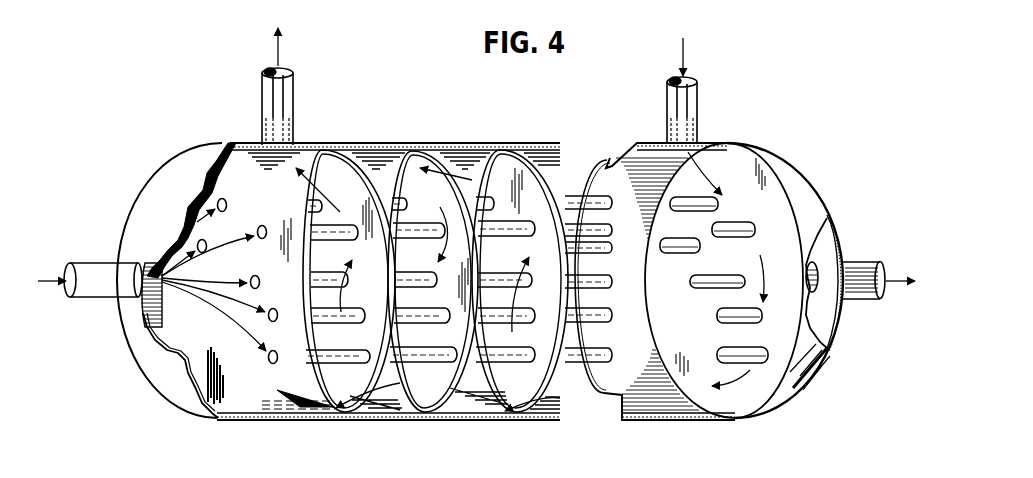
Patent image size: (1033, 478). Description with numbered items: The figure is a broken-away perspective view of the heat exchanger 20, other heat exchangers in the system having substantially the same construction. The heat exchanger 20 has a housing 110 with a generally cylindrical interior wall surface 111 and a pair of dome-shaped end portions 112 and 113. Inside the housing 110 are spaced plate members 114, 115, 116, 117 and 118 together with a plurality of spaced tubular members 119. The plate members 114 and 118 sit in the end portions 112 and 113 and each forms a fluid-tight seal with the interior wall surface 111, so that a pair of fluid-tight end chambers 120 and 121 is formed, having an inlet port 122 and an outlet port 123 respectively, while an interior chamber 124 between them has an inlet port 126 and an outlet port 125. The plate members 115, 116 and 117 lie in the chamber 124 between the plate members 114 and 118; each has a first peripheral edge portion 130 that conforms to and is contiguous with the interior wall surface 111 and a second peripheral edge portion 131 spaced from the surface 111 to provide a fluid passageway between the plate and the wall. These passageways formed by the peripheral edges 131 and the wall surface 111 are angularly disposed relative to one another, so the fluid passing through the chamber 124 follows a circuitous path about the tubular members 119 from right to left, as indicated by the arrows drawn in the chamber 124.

The heat exchanger 20 is at (458, 146).
The housing 110 is at (328, 146).
The interior wall surface 111 is at (548, 156).
The end portion 112 is at (157, 372).
The end portion 113 is at (800, 378).
The plate member 114 is at (282, 380).
The plate member 115 is at (367, 380).
The plate member 116 is at (433, 402).
The plate member 117 is at (533, 178).
The plate member 118 is at (734, 420).
The tubular members 119 is at (343, 266).
The end chamber 120 is at (220, 420).
The end chamber 121 is at (822, 326).
The inlet port 122 is at (72, 286).
The outlet port 123 is at (880, 294).
The interior chamber 124 is at (488, 420).
The outlet port 125 is at (283, 68).
The inlet port 126 is at (696, 82).
The first peripheral edge portion 130 is at (390, 254).
The second peripheral edge portion 131 is at (452, 172).